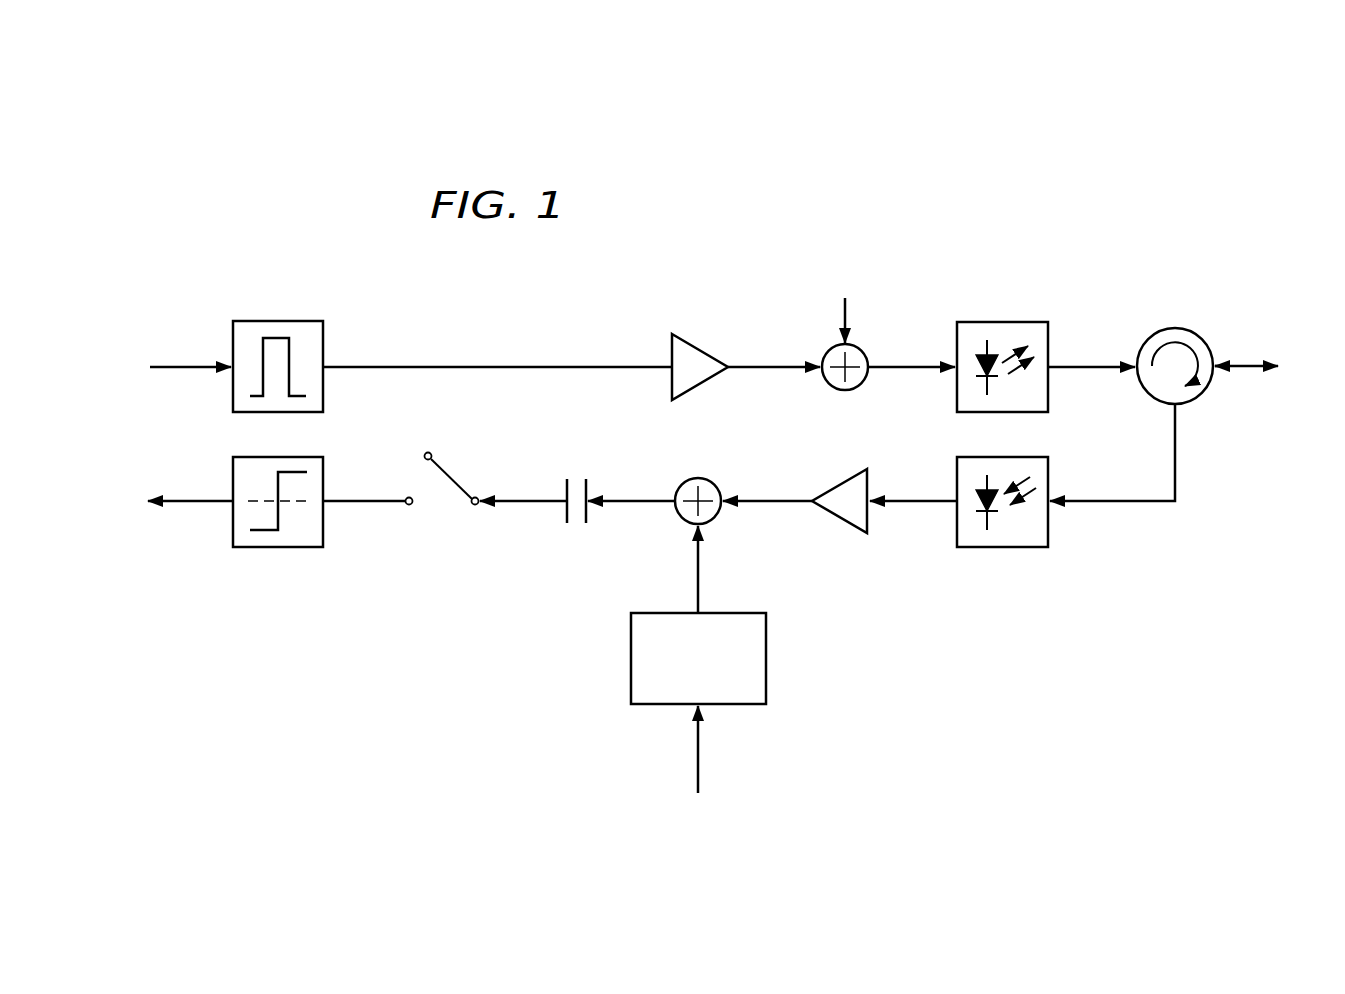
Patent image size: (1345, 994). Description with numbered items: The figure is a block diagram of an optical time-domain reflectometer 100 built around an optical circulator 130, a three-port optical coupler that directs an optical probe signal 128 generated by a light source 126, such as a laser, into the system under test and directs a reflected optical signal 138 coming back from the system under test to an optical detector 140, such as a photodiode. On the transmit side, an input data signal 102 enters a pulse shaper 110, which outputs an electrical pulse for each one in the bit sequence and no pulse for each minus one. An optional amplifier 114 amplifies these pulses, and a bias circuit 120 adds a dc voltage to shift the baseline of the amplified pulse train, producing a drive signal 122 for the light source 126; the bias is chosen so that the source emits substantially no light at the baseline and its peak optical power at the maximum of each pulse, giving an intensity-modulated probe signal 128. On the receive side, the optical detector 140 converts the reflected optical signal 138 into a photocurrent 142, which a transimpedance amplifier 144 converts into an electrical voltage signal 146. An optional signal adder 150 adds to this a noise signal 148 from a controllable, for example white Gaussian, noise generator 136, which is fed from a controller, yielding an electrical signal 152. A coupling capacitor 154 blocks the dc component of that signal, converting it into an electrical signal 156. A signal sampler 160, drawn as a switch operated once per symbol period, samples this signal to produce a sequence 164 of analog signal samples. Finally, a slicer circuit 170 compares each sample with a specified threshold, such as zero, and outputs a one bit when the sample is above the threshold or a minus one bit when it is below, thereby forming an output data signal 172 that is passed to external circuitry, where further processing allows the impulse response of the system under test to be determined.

The reflectometer 100 is at (511, 262).
The input data signal 102 is at (210, 372).
The pulse shaper 110 is at (282, 321).
The amplifier 114 is at (697, 348).
The bias circuit 120 is at (832, 386).
The drive signal 122 is at (928, 370).
The light source 126 is at (975, 322).
The optical probe signal 128 is at (1112, 370).
The optical circulator 130 is at (1177, 329).
The noise generator 136 is at (767, 660).
The reflected optical signal 138 is at (1177, 456).
The optical detector 140 is at (1012, 548).
The photocurrent 142 is at (938, 503).
The transimpedance amplifier 144 is at (843, 527).
The electrical signal 146 is at (784, 503).
The noise signal 148 is at (700, 588).
The signal adder 150 is at (704, 478).
The electrical signal 152 is at (660, 503).
The coupling capacitor 154 is at (578, 478).
The electrical signal 156 is at (549, 503).
The signal sampler 160 is at (436, 546).
The sequence of analog signal samples 164 is at (396, 503).
The slicer circuit 170 is at (296, 547).
The output data signal 172 is at (202, 503).